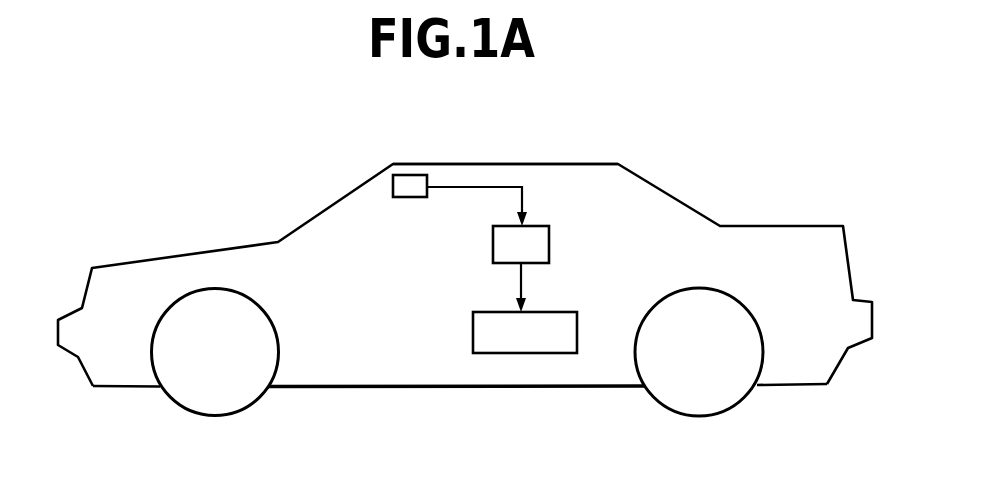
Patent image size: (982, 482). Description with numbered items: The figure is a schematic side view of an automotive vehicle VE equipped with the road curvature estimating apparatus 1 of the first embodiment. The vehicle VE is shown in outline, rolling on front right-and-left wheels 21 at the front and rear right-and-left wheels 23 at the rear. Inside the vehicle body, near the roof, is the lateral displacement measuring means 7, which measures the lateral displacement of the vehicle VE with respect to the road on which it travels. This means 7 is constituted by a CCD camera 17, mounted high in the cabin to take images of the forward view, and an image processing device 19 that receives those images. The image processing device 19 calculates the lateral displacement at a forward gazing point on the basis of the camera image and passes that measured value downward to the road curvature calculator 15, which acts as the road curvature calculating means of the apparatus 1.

The road curvature estimating apparatus 1 is at (618, 228).
The lateral displacement measuring means 7 is at (543, 210).
The road curvature calculator 15 is at (473, 327).
The CCD camera 17 is at (411, 175).
The image processing device 19 is at (493, 246).
The front right-and-left wheels 21 is at (215, 413).
The rear right-and-left wheels 23 is at (707, 415).
The automotive vehicle VE is at (755, 226).